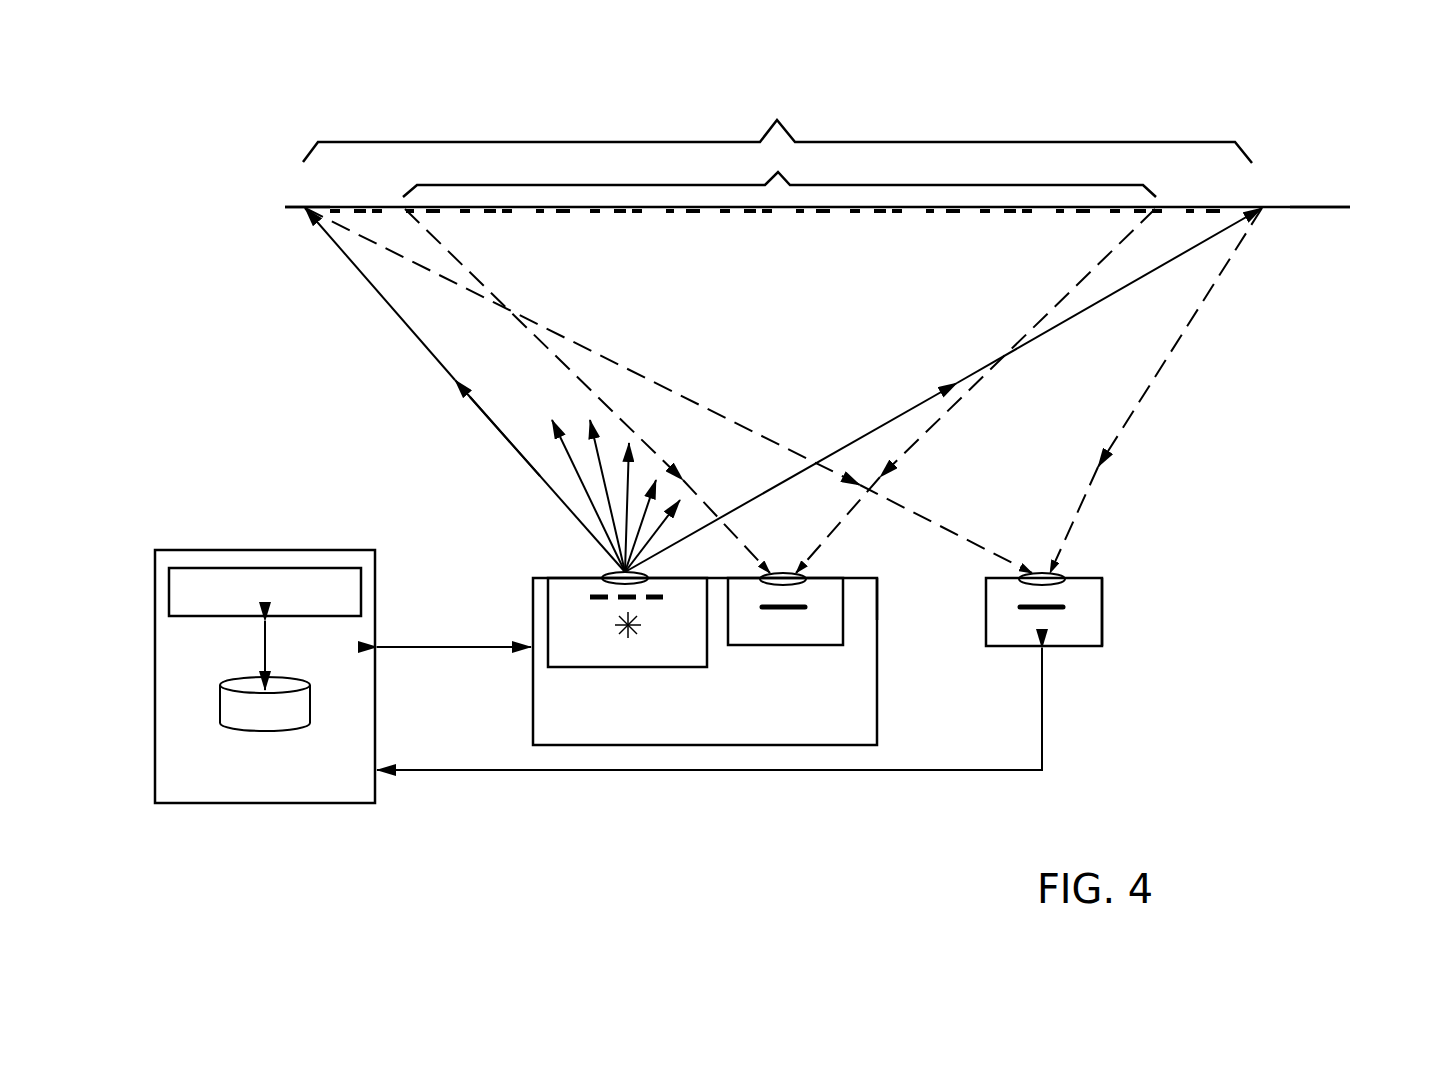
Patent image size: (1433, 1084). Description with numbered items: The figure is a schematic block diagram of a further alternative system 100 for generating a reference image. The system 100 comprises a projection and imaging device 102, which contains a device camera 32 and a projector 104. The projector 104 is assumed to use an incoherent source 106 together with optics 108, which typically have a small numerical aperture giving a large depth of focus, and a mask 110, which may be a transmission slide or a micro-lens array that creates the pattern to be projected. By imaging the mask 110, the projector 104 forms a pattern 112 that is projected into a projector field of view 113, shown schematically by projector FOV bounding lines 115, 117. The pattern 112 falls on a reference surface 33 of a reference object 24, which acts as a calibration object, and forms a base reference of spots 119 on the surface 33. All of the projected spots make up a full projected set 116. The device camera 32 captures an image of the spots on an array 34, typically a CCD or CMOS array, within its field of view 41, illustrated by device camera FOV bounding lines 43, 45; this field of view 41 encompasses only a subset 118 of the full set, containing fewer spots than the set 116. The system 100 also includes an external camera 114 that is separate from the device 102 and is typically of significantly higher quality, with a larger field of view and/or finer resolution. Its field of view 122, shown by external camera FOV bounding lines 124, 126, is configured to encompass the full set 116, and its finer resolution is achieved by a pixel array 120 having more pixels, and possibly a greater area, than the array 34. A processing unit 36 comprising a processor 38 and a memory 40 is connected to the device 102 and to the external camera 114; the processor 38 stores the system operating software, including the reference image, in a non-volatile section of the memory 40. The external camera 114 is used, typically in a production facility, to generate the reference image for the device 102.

The reference object 24 is at (1350, 208).
The reference surface 33 is at (1312, 208).
The projected set of spots 116 is at (777, 129).
The subset of the full set 118 is at (779, 172).
The base reference 119 is at (297, 249).
The projector FOV bounding line 115 is at (433, 357).
The pattern 112 is at (424, 419).
The projector FOV bounding line 117 is at (903, 412).
The device camera FOV bounding line 45 is at (467, 267).
The device camera FOV bounding line 43 is at (1088, 275).
The external camera FOV bounding line 126 is at (913, 510).
The external camera FOV bounding line 124 is at (1155, 383).
The projector field of view 113 is at (640, 332).
The projection and imaging device 102 is at (877, 660).
The device camera 32 is at (877, 600).
The projector 104 is at (553, 597).
The optics 108 is at (602, 576).
The mask 110 is at (590, 597).
The incoherent source 106 is at (612, 628).
The device camera field of view 41 is at (797, 541).
The array 34 is at (843, 595).
The external camera field of view 122 is at (1043, 522).
The pixel array 120 is at (1063, 607).
The external camera 114 is at (1102, 600).
The processing unit 36 is at (157, 712).
The processor 38 is at (173, 588).
The memory 40 is at (310, 708).
The system 100 is at (1230, 690).